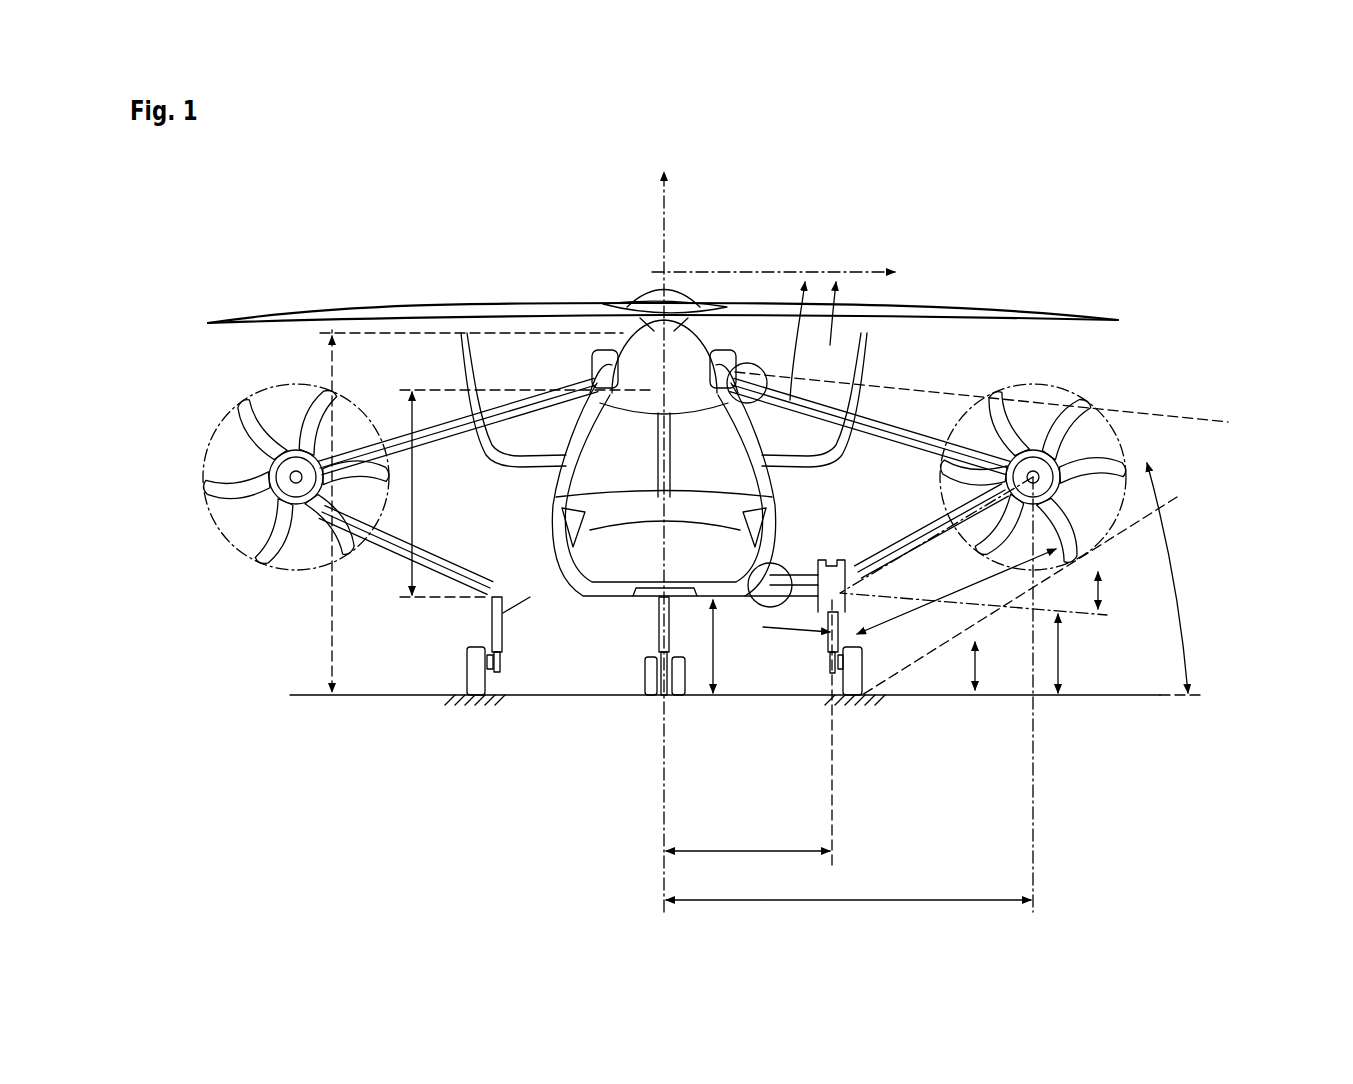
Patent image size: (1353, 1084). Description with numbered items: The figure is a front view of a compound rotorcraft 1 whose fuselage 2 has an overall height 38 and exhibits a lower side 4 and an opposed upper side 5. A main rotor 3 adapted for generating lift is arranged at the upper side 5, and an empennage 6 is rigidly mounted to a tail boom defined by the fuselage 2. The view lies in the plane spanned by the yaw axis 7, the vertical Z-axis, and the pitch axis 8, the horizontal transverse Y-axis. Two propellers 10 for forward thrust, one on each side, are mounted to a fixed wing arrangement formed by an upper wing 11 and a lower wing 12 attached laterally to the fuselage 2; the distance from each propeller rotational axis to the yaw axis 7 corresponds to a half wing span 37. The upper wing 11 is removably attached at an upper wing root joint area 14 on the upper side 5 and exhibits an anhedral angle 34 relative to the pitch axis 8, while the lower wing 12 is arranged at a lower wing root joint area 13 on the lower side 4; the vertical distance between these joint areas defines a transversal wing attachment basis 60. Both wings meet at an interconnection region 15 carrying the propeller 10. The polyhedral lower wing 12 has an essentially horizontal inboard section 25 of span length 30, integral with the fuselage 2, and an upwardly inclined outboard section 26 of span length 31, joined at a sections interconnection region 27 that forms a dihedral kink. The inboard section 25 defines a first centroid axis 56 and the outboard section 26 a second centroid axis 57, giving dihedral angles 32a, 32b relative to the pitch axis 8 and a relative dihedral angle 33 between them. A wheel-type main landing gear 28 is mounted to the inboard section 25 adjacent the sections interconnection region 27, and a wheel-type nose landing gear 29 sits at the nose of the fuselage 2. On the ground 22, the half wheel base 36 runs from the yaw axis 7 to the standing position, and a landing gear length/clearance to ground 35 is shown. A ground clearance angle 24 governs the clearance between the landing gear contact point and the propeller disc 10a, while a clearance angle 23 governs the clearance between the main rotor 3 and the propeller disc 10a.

The compound rotorcraft 1 is at (382, 183).
The fuselage 2 is at (488, 280).
The main rotor 3 is at (1048, 312).
The lower side 4 is at (605, 600).
The upper side 5 is at (545, 280).
The empennage 6 is at (913, 416).
The yaw axis 7 is at (612, 225).
The pitch axis 8 is at (727, 268).
The propeller 10 is at (1124, 430).
The propeller disc 10a is at (1092, 460).
The upper wing 11 is at (955, 285).
The lower wing 12 is at (376, 566).
The lower wing root joint area 13 is at (747, 609).
The upper wing root joint area 14 is at (770, 360).
The interconnection region 15 is at (182, 424).
The ground 22 is at (513, 698).
The clearance angle 23 is at (841, 297).
The ground clearance angle 24 is at (976, 667).
The inboard section 25 is at (800, 535).
The outboard section 26 is at (882, 540).
The sections interconnection region 27 is at (867, 608).
The wheel-type main landing gear 28 is at (815, 646).
The wheel-type nose landing gear 29 is at (646, 625).
The span length 30 is at (788, 645).
The span length 31 is at (924, 621).
The dihedral angle 32a is at (1062, 658).
The dihedral angle 32b is at (1194, 648).
The relative dihedral angle 33 is at (1102, 578).
The anhedral angle 34 is at (810, 292).
The landing gear length/clearance to ground 35 is at (703, 656).
The half wheel base 36 is at (746, 848).
The half wing span 37 is at (884, 898).
The overall height 38 is at (270, 625).
The first centroid axis 56 is at (1084, 623).
The second centroid axis 57 is at (1150, 463).
The transversal wing attachment basis 60 is at (403, 414).